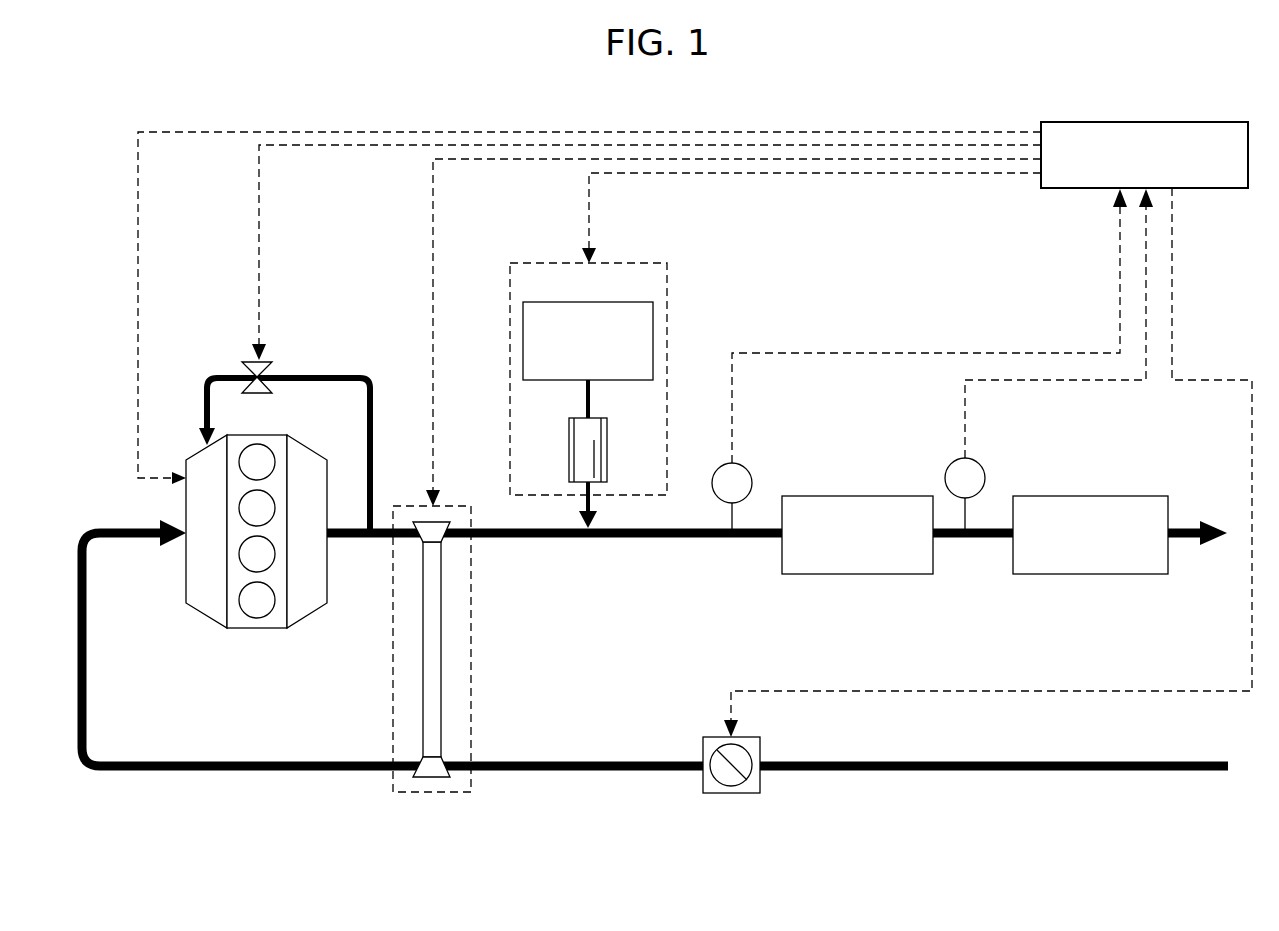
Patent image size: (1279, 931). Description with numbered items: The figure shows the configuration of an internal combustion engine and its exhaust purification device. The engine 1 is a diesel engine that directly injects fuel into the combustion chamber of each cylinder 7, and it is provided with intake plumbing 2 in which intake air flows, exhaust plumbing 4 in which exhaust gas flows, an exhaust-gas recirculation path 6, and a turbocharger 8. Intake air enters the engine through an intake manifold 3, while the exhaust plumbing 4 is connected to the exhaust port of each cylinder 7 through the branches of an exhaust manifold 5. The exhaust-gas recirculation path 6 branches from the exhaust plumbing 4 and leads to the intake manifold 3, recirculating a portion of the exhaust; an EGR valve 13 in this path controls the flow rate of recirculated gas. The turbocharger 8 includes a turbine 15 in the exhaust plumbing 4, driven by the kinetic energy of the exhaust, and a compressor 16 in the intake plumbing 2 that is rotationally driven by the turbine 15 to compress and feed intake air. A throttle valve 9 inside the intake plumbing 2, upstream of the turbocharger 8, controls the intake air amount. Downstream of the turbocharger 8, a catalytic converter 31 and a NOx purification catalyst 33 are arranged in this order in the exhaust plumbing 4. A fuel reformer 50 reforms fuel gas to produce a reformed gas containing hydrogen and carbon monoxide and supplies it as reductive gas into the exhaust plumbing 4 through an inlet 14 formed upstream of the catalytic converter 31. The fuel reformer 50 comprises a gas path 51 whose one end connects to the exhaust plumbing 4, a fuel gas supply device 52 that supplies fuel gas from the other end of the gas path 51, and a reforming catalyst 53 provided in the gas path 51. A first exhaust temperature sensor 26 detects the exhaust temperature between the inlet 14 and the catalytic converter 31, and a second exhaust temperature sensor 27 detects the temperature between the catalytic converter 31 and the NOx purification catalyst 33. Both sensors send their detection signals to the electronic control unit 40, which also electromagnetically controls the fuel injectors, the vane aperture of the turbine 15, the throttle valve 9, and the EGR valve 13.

The internal combustion engine 1 is at (256, 576).
The intake plumbing 2 is at (235, 771).
The intake manifold 3 is at (192, 610).
The exhaust plumbing 4 is at (1183, 527).
The exhaust manifold 5 is at (317, 612).
The exhaust-gas recirculation path 6 is at (332, 378).
The cylinder 7 is at (262, 617).
The turbocharger 8 is at (520, 677).
The throttle valve 9 is at (730, 795).
The EGR valve 13 is at (265, 360).
The inlet 14 is at (593, 510).
The turbine 15 is at (442, 543).
The compressor 16 is at (442, 755).
The first exhaust temperature sensor 26 is at (746, 466).
The second exhaust temperature sensor 27 is at (985, 470).
The catalytic converter 31 is at (875, 495).
The NOx purification catalyst 33 is at (1108, 495).
The electronic control unit 40 is at (1220, 120).
The fuel reformer 50 is at (682, 357).
The gas path 51 is at (592, 402).
The fuel gas supply device 52 is at (607, 302).
The reforming catalyst 53 is at (608, 440).